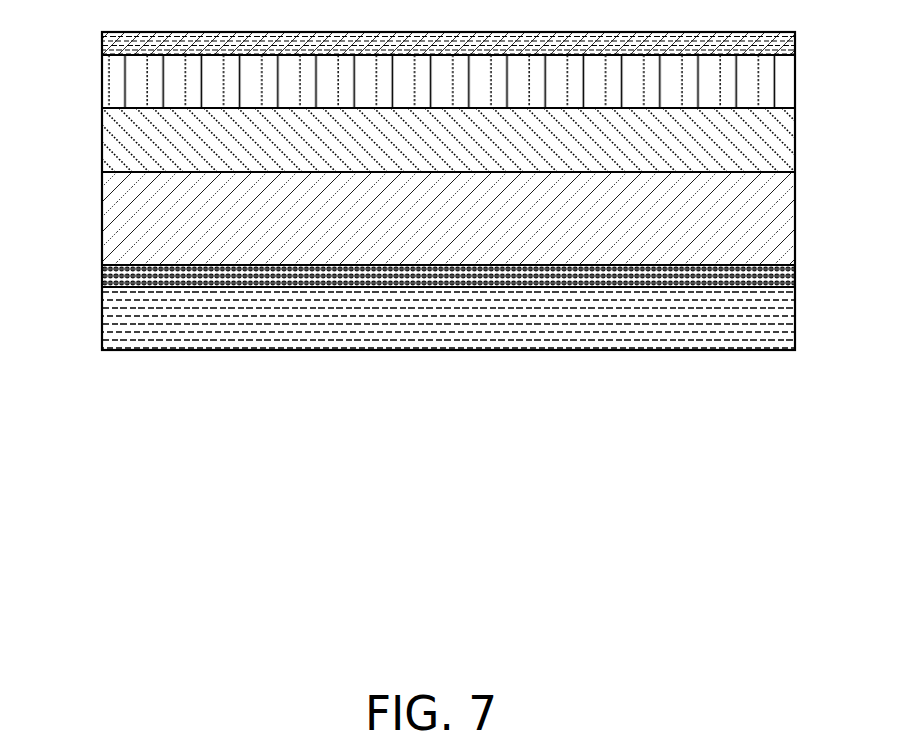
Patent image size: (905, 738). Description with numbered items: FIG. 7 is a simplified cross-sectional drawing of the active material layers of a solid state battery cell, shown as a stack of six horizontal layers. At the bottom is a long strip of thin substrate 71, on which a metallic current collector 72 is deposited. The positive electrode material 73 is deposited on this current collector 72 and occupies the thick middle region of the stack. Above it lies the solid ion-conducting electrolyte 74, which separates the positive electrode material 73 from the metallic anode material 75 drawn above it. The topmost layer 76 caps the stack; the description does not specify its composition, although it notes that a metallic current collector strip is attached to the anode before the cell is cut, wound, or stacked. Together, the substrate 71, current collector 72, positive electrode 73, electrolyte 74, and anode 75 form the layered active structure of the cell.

The thin substrate 71 is at (795, 325).
The metallic current collector 72 is at (795, 276).
The positive electrode material 73 is at (102, 200).
The solid ion-conducting electrolyte 74 is at (795, 138).
The metallic anode material 75 is at (102, 70).
The top cover layer 76 is at (772, 33).